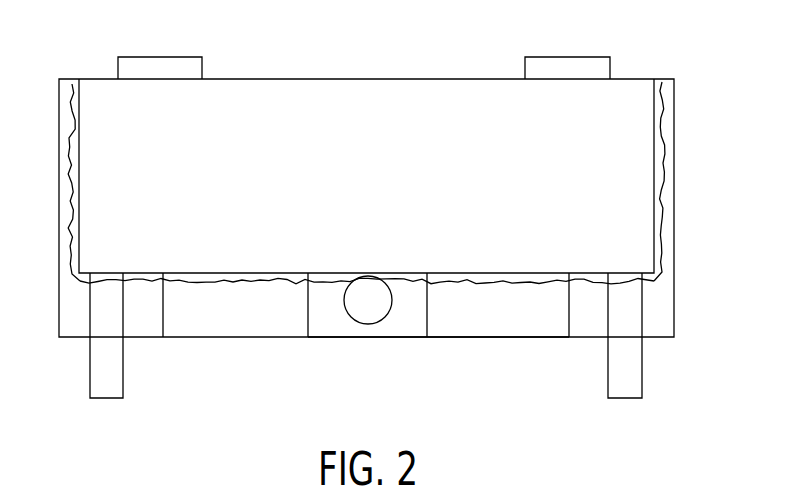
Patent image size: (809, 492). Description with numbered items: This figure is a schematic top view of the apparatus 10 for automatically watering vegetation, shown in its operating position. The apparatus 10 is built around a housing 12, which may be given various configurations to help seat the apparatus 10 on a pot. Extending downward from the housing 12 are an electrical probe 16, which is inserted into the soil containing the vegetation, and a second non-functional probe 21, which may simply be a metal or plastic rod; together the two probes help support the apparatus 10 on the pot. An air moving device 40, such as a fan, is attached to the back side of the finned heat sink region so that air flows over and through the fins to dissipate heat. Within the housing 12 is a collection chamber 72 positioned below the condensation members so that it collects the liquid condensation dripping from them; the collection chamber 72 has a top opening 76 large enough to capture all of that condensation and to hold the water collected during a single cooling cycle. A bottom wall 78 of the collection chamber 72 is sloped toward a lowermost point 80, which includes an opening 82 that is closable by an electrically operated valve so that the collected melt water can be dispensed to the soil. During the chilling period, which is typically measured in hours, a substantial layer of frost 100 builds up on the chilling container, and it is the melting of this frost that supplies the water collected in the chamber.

The apparatus 10 is at (703, 109).
The housing 12 is at (350, 92).
The electrical probe 16 is at (114, 380).
The second non-functional probe 21 is at (632, 378).
The air moving device 40 is at (600, 68).
The collection chamber 72 is at (665, 297).
The top opening 76 is at (70, 310).
The bottom wall 78 is at (505, 325).
The lowermost point 80 is at (350, 318).
The opening 82 is at (378, 308).
The layer of frost 100 is at (660, 226).